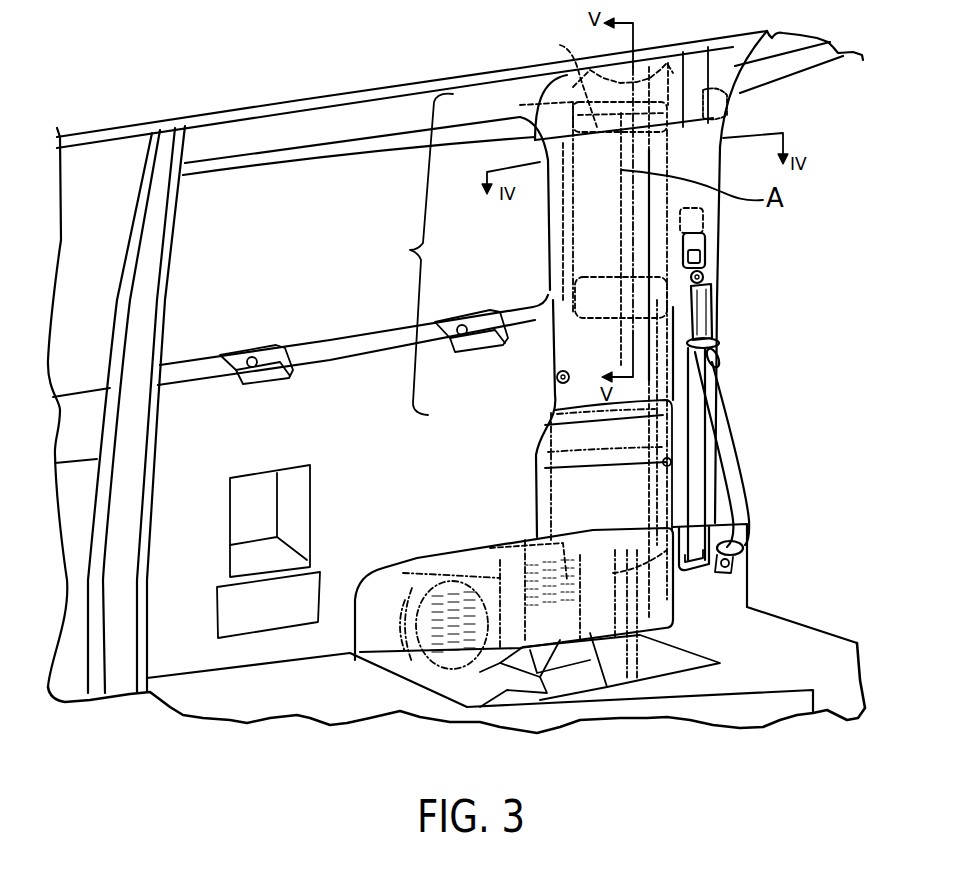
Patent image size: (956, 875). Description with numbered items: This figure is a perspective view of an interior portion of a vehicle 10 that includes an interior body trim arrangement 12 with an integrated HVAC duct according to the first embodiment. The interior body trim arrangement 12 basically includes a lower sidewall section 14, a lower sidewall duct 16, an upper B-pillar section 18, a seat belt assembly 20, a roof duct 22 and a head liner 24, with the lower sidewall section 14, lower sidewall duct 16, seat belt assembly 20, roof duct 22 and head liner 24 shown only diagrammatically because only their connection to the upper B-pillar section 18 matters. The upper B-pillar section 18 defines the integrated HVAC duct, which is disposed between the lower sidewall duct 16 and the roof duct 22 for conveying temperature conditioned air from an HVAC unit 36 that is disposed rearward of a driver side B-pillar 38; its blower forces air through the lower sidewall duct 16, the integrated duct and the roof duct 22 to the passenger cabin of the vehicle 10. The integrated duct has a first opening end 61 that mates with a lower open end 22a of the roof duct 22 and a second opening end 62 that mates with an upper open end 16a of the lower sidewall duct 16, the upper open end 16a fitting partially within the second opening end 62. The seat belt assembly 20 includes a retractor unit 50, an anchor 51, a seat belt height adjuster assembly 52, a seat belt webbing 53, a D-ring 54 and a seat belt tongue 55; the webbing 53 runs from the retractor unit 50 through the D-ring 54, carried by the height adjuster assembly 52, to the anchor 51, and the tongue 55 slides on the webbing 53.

The vehicle 10 is at (220, 100).
The interior body trim arrangement 12 is at (419, 254).
The lower sidewall section 14 is at (446, 405).
The lower sidewall duct 16 is at (565, 350).
The upper open end of the lower sidewall duct 16a is at (705, 252).
The upper B-pillar section 18 is at (551, 262).
The seat belt assembly 20 is at (684, 249).
The roof duct 22 is at (540, 107).
The lower open end of the roof duct 22a is at (560, 45).
The head liner 24 is at (471, 115).
The HVAC unit 36 is at (414, 690).
The driver side B-pillar 38 is at (740, 90).
The retractor unit 50 is at (723, 577).
The anchor 51 is at (748, 553).
The seat belt height adjuster assembly 52 is at (705, 267).
The seat belt webbing 53 is at (730, 413).
The D-ring 54 is at (712, 290).
The seat belt tongue 55 is at (720, 355).
The first opening end 61 is at (649, 67).
The second opening end 62 is at (553, 390).